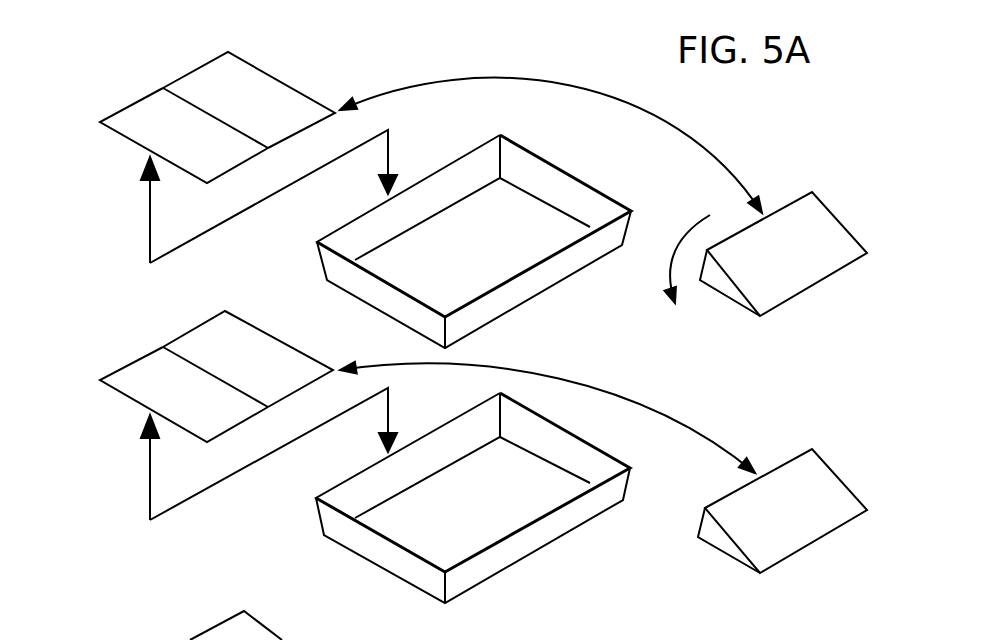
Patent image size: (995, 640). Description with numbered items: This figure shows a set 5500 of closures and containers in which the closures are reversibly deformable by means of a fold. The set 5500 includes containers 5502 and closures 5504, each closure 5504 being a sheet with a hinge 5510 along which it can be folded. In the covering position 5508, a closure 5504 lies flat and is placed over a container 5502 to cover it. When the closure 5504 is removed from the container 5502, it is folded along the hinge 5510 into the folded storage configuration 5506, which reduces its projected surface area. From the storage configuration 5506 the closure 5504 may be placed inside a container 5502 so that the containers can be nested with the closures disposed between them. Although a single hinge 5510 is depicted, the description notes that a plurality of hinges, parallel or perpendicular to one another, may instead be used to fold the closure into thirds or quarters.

The set of closures and containers 5500 is at (792, 385).
The container 5502 is at (505, 318).
The closure 5504 is at (113, 128).
The storage configuration 5506 is at (820, 242).
The covering position 5508 is at (295, 92).
The hinge 5510 is at (220, 118).